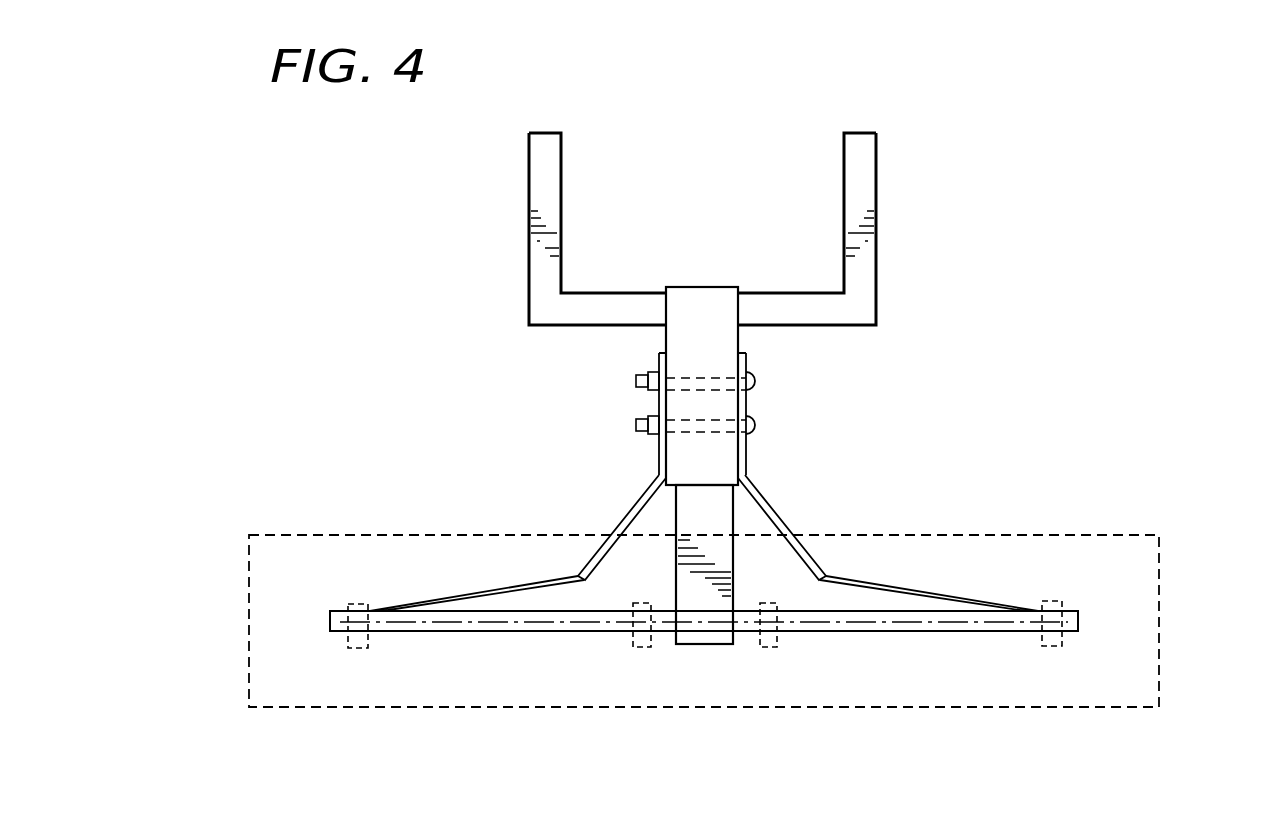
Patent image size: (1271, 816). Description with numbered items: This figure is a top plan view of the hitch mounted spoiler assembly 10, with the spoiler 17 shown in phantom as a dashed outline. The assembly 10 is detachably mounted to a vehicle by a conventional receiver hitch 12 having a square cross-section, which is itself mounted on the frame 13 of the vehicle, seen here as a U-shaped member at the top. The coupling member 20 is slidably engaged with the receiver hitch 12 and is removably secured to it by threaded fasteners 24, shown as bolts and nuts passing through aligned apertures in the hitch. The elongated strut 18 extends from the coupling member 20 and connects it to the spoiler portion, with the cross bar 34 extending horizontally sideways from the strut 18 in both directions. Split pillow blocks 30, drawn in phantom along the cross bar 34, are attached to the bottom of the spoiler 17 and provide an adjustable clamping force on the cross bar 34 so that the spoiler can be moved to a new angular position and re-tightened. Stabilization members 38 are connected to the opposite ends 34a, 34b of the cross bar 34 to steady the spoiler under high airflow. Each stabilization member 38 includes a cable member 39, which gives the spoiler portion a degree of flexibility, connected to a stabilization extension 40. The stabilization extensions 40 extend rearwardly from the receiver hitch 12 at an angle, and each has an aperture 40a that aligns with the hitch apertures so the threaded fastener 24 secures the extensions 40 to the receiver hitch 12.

The spoiler assembly 10 is at (1175, 388).
The receiver hitch 12 is at (707, 318).
The frame 13 is at (862, 181).
The spoiler 17 is at (760, 693).
The elongated strut 18 is at (697, 638).
The coupling member 20 is at (676, 598).
The threaded fastener 24 is at (758, 426).
The split pillow block 30 is at (1040, 643).
The cross bar 34 is at (538, 622).
The cross bar end 34a is at (1068, 625).
The cross bar end 34b is at (337, 623).
The stabilization member 38 is at (482, 467).
The cable member 39 is at (425, 598).
The stabilization extension 40 is at (622, 518).
The aperture 40a is at (659, 408).